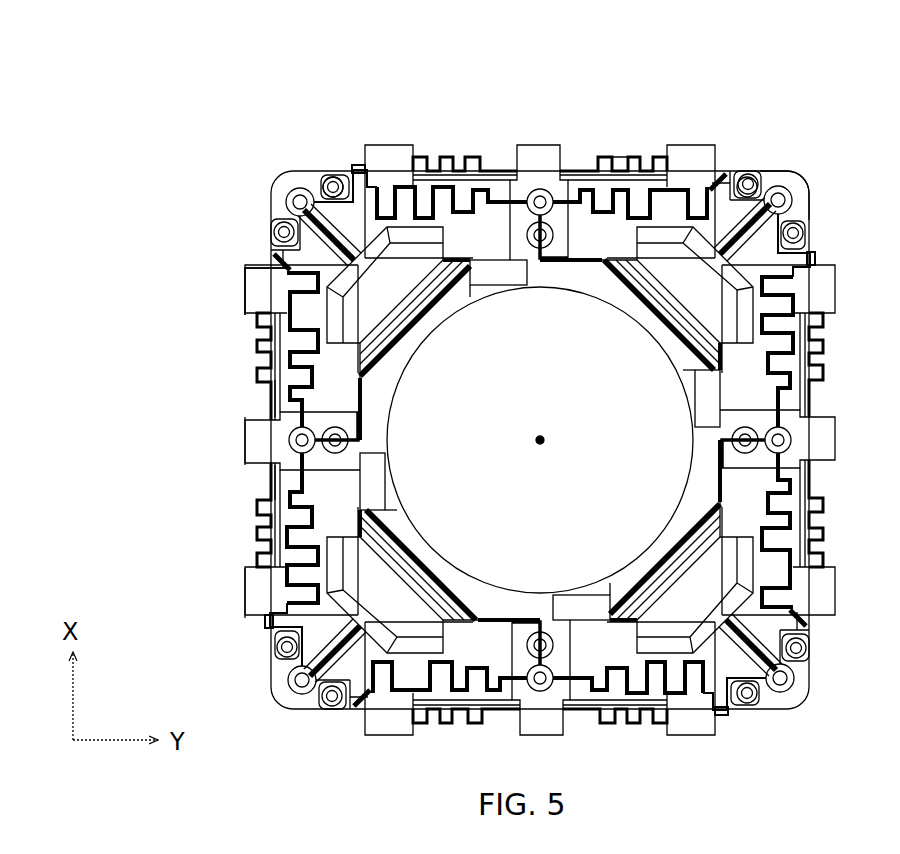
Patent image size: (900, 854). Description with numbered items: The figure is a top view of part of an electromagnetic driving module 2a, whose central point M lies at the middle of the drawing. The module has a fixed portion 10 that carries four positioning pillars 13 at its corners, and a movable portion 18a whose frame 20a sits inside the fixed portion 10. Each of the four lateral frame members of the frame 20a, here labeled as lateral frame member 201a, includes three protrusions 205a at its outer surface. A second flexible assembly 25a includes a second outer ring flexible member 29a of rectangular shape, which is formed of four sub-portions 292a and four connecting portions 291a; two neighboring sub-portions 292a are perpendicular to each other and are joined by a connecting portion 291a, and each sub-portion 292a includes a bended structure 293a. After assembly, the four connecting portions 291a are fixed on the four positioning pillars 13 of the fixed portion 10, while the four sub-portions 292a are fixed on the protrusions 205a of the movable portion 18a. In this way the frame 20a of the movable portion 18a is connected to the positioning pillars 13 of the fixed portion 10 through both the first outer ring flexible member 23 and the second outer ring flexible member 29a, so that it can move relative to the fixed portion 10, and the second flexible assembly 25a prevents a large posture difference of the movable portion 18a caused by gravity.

The electromagnetic driving module 2a is at (188, 104).
The fixed portion 10 is at (267, 210).
The positioning pillar 13 is at (805, 215).
The movable portion 18a is at (229, 568).
The frame 20a is at (242, 277).
The connecting wire 201a is at (500, 190).
The protrusion 205a is at (265, 290).
The first outer ring flexible member 23 is at (380, 183).
The second flexible assembly 25a is at (356, 162).
The second outer ring flexible member 29a is at (637, 156).
The connecting portion 291a is at (340, 178).
The sub-portion 292a is at (583, 190).
The bended structure 293a is at (262, 347).
The center point M is at (534, 441).